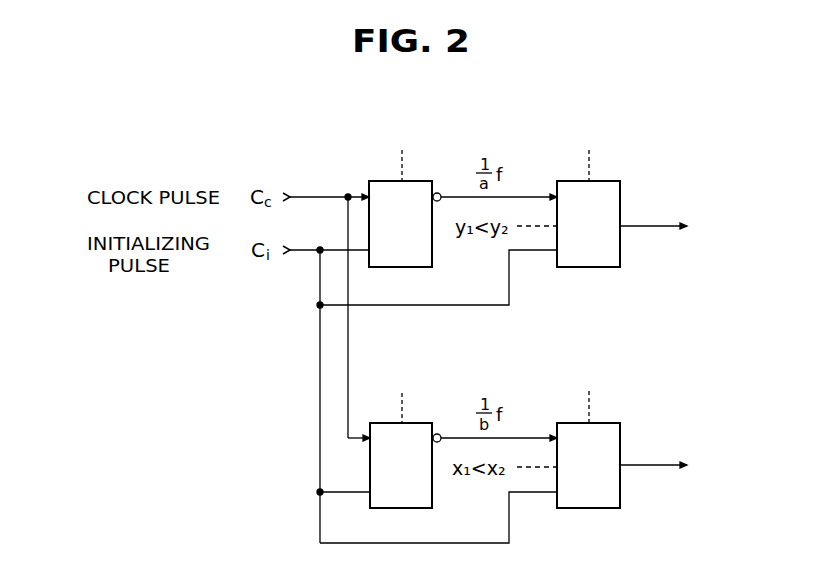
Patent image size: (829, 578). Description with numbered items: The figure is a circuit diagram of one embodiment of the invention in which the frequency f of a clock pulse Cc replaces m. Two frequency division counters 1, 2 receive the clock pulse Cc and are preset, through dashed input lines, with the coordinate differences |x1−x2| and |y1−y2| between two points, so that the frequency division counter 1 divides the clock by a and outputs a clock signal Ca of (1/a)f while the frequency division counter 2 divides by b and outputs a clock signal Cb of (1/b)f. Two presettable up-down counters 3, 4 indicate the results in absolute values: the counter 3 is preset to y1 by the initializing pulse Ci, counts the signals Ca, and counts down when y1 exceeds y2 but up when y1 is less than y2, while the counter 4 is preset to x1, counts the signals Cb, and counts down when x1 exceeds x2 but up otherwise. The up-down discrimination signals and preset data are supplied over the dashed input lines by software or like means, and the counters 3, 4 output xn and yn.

The frequency division counter 1 is at (432, 256).
The frequency division counter 2 is at (432, 497).
The presettable up-down counter 3 is at (620, 256).
The presettable up-down counter 4 is at (620, 497).